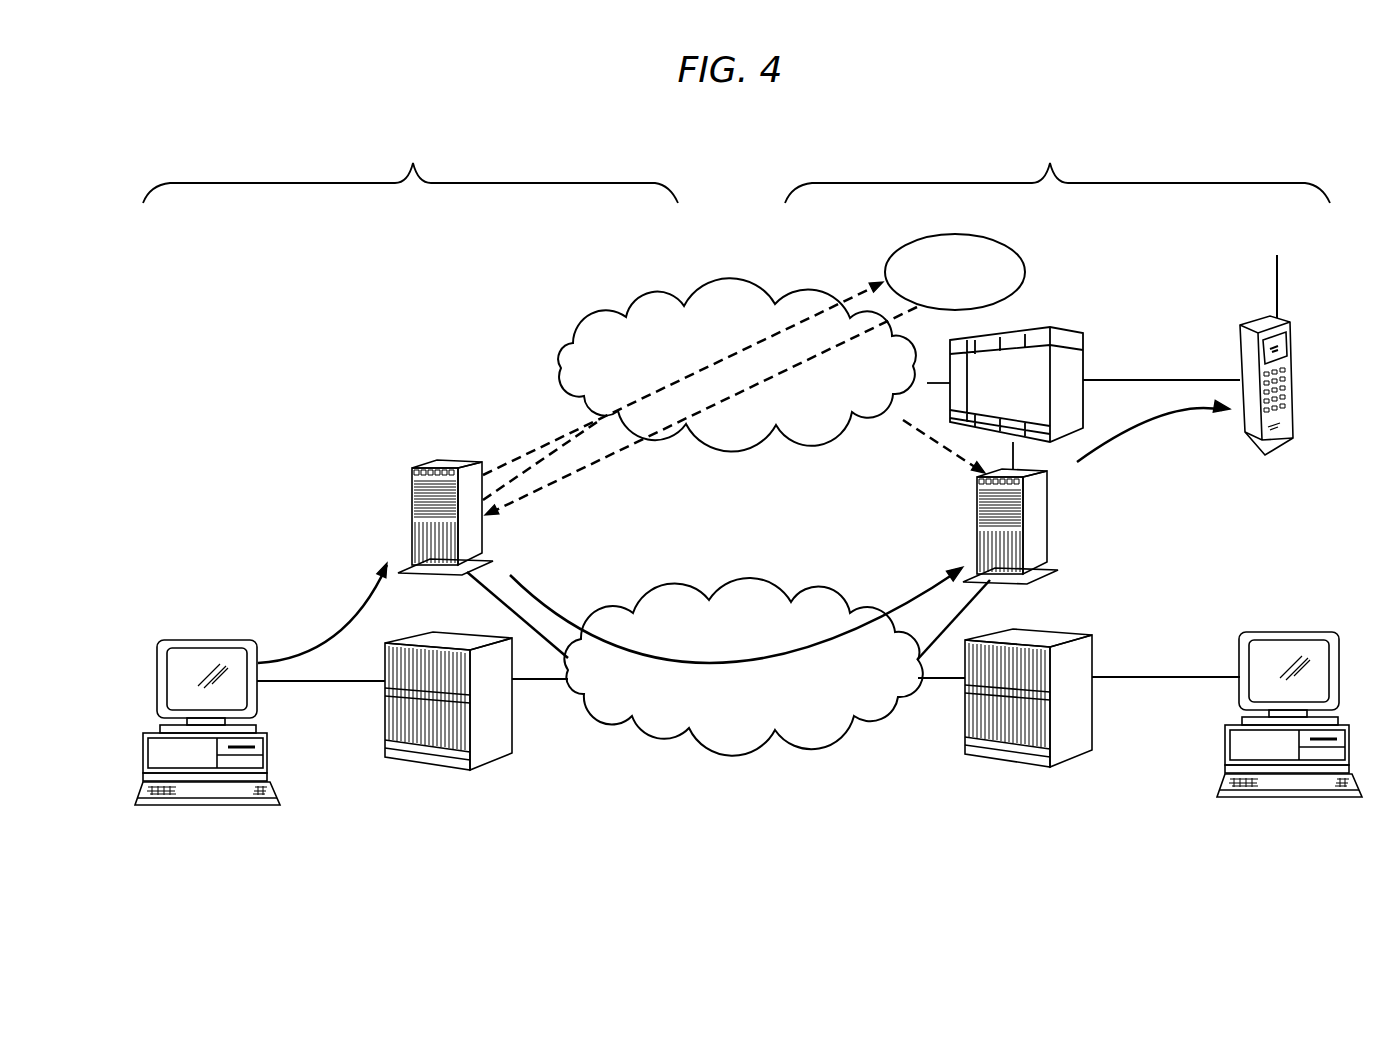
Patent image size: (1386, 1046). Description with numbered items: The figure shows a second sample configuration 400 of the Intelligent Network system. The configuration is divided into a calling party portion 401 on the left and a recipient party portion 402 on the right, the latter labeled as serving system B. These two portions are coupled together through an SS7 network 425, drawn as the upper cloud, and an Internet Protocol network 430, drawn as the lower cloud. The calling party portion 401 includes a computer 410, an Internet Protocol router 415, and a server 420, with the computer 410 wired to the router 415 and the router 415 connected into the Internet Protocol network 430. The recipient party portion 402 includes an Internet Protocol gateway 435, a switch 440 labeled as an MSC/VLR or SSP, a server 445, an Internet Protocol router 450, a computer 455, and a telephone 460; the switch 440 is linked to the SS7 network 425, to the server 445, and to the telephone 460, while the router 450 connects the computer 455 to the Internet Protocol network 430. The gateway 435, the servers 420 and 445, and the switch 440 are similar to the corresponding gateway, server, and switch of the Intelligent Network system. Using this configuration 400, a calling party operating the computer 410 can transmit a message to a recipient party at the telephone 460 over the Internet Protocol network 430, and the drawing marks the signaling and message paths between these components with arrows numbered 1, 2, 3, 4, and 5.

The second sample configuration 400 is at (943, 101).
The calling party portion 401 is at (410, 168).
The recipient party portion 402 is at (1057, 171).
The computer 410 is at (157, 666).
The Internet Protocol router 415 is at (395, 760).
The server 420 is at (412, 485).
The SS7 network 425 is at (733, 283).
The Internet Protocol network 430 is at (737, 582).
The Internet Protocol gateway 435 is at (1023, 263).
The switch 440 is at (1083, 362).
The server 445 is at (1047, 519).
The Internet Protocol router 450 is at (1000, 752).
The computer 455 is at (1337, 645).
The telephone 460 is at (1290, 327).
The call request message 1 is at (330, 640).
The location query message 2 is at (848, 298).
The routing response message 3 is at (597, 462).
The call setup over IP network 4 is at (818, 663).
The call delivery to mobile station 5 is at (1177, 418).